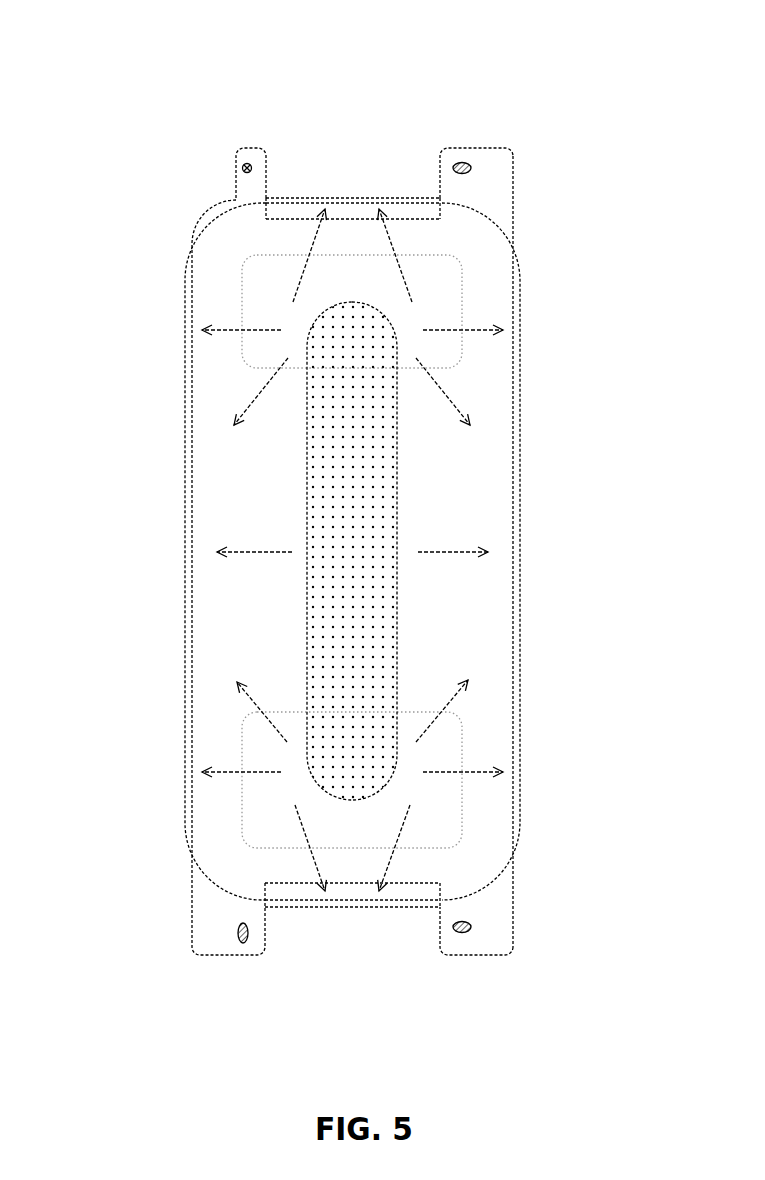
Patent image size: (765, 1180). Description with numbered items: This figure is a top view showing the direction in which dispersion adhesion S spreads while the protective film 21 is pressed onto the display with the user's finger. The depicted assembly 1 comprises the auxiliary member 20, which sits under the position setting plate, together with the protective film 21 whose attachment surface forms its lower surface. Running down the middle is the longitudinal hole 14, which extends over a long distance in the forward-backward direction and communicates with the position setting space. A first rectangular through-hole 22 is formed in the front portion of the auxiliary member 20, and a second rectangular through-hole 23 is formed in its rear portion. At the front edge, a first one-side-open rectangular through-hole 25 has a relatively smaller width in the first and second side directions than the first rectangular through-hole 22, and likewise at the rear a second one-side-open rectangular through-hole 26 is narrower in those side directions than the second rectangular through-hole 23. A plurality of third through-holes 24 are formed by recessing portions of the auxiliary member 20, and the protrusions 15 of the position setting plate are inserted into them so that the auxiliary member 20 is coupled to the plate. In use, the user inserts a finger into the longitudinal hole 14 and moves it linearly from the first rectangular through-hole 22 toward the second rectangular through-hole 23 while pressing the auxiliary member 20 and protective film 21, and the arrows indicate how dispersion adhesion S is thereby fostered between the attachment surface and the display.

The shield can assembly 1 is at (185, 505).
The longitudinal hole 14 is at (397, 470).
The dispersion adhesion S is at (355, 627).
The protrusions 15 is at (245, 168).
The auxiliary member 20 is at (517, 198).
The protective film 21 is at (350, 212).
The first rectangular through-hole 22 is at (240, 300).
The second rectangular through-hole 23 is at (243, 798).
The third through-holes 24 is at (470, 165).
The first one-side-open rectangular through-hole 25 is at (418, 217).
The second one-side-open rectangular through-hole 26 is at (405, 895).